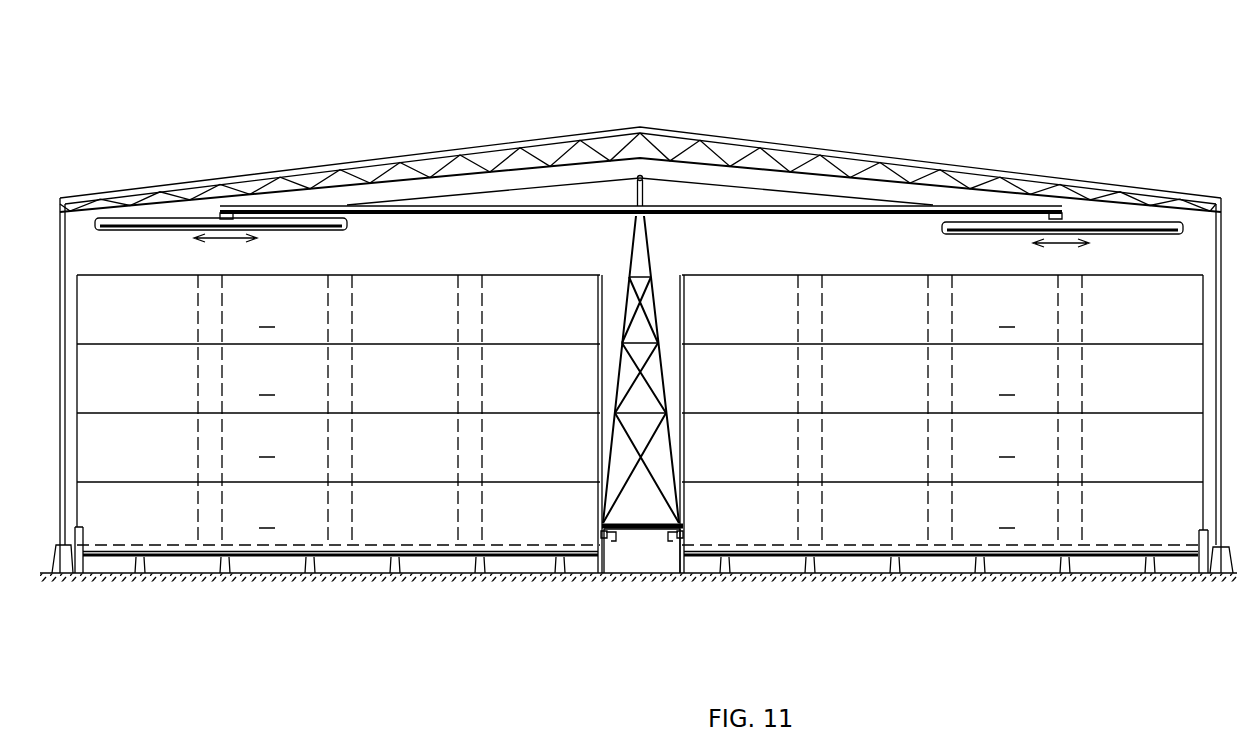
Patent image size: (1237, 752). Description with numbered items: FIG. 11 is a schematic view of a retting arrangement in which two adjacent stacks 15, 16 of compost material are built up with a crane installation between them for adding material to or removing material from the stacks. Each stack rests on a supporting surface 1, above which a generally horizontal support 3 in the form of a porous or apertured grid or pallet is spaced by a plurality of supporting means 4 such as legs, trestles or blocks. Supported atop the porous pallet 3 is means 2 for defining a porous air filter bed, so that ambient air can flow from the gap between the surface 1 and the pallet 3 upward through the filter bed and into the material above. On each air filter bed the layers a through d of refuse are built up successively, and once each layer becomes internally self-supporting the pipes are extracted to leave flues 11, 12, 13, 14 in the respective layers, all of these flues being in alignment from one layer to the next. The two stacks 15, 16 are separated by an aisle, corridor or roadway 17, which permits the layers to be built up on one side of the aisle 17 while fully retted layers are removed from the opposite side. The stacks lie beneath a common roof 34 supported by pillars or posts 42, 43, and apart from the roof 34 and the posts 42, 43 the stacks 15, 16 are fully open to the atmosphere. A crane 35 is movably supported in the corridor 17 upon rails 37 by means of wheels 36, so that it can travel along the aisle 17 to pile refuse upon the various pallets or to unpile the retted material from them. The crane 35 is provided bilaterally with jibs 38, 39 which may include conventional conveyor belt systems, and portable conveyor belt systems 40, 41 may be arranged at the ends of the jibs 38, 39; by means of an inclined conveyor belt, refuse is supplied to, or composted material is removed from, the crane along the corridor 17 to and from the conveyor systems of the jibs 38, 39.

The supporting surface 1 is at (418, 572).
The means for defining a porous air filter bed 2 is at (365, 550).
The horizontal support 3 is at (337, 560).
The supporting means 4 is at (475, 558).
The flue 11 is at (353, 507).
The flue 12 is at (353, 440).
The flue 13 is at (353, 369).
The flue 14 is at (353, 310).
The stack 15 is at (388, 264).
The stack 16 is at (888, 263).
The aisle 17 is at (643, 553).
The roof 34 is at (788, 144).
The crane 35 is at (640, 442).
The wheels 36 is at (602, 536).
The rails 37 is at (606, 541).
The jib 38 is at (575, 217).
The jib 39 is at (723, 216).
The portable conveyor belt system 40 is at (296, 231).
The portable conveyor belt system 41 is at (1017, 233).
The pillar 42 is at (67, 257).
The pillar 43 is at (1216, 250).